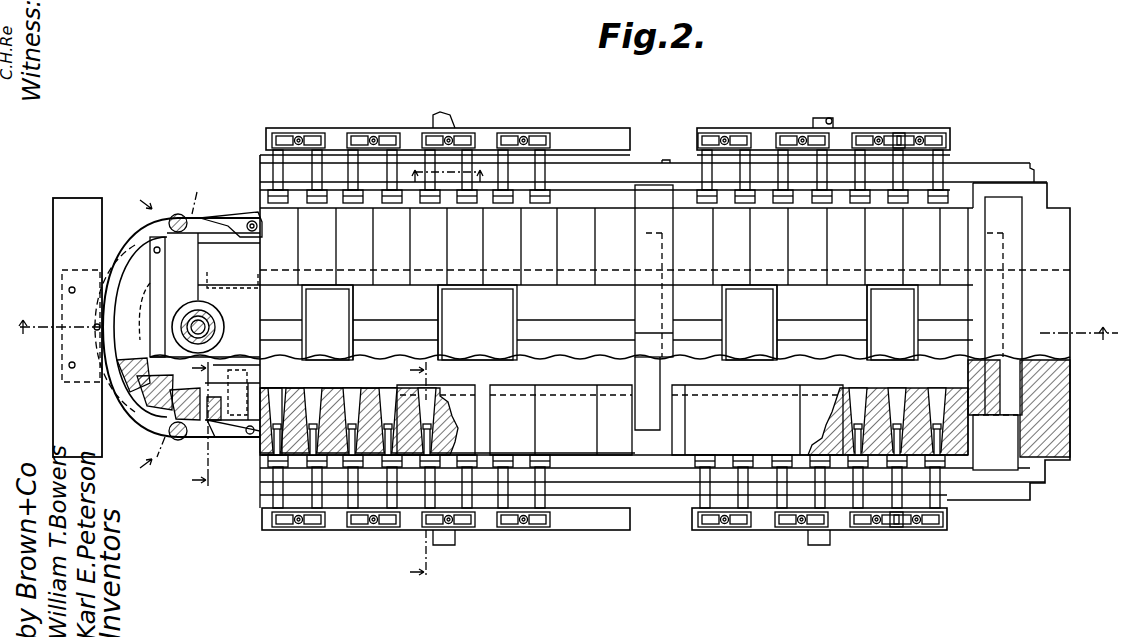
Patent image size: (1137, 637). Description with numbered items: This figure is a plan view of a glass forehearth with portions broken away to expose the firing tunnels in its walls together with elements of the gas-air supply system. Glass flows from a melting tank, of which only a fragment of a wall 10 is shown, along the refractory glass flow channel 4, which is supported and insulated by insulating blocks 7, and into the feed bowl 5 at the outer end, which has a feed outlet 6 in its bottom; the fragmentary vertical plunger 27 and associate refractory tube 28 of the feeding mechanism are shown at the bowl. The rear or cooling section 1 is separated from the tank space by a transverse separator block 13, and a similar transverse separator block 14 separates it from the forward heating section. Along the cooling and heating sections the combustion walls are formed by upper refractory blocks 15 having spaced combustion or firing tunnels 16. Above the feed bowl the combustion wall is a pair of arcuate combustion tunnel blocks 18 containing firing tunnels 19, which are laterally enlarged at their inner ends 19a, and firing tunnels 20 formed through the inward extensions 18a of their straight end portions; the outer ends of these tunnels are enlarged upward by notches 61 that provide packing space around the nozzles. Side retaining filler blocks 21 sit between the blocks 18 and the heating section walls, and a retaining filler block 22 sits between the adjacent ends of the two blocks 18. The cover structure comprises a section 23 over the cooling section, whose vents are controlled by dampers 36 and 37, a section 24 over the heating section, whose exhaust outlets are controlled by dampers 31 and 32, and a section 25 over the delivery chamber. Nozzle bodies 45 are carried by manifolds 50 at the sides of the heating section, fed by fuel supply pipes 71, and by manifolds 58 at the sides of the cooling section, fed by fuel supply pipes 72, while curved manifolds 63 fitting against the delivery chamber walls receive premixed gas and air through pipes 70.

The rear or cooling section 1 is at (562, 342).
The refractory glass flow channel 4 is at (193, 426).
The feed bowl 5 is at (411, 473).
The feed outlet 6 is at (160, 334).
The insulating blocks 7 is at (448, 172).
The wall of the melting tank 10 is at (1060, 287).
The transverse separator block 13 is at (1000, 368).
The transverse separator block 14 is at (658, 383).
The upper refractory blocks 15 is at (282, 462).
The combustion or firing tunnels 16 is at (378, 392).
The combustion tunnel blocks 18 is at (132, 246).
The inward extension 18a is at (248, 375).
The combustion or firing tunnels 19 is at (160, 415).
The laterally enlarged inner ends 19a is at (170, 408).
The combustion or firing tunnels 20 is at (288, 385).
The side retaining filler blocks 21 is at (262, 254).
The retaining filler block 22 is at (100, 303).
The cover section 23 is at (822, 322).
The cover section 24 is at (395, 322).
The cover section 25 is at (205, 295).
The vertical plunger 27 is at (208, 329).
The refractory tube 28 is at (206, 317).
The closure block or damper 31 is at (327, 322).
The closure block or damper 32 is at (477, 322).
The closure block or damper 36 is at (749, 322).
The closure block or damper 37 is at (892, 322).
The nozzle body 45 is at (574, 168).
The manifold 50 is at (495, 132).
The manifold 58 is at (845, 137).
The notches 61 is at (214, 440).
The manifold 63 is at (205, 220).
The fuel supply pipe 70 is at (184, 214).
The fuel supply pipe 71 is at (452, 122).
The fuel supply pipe 72 is at (835, 126).